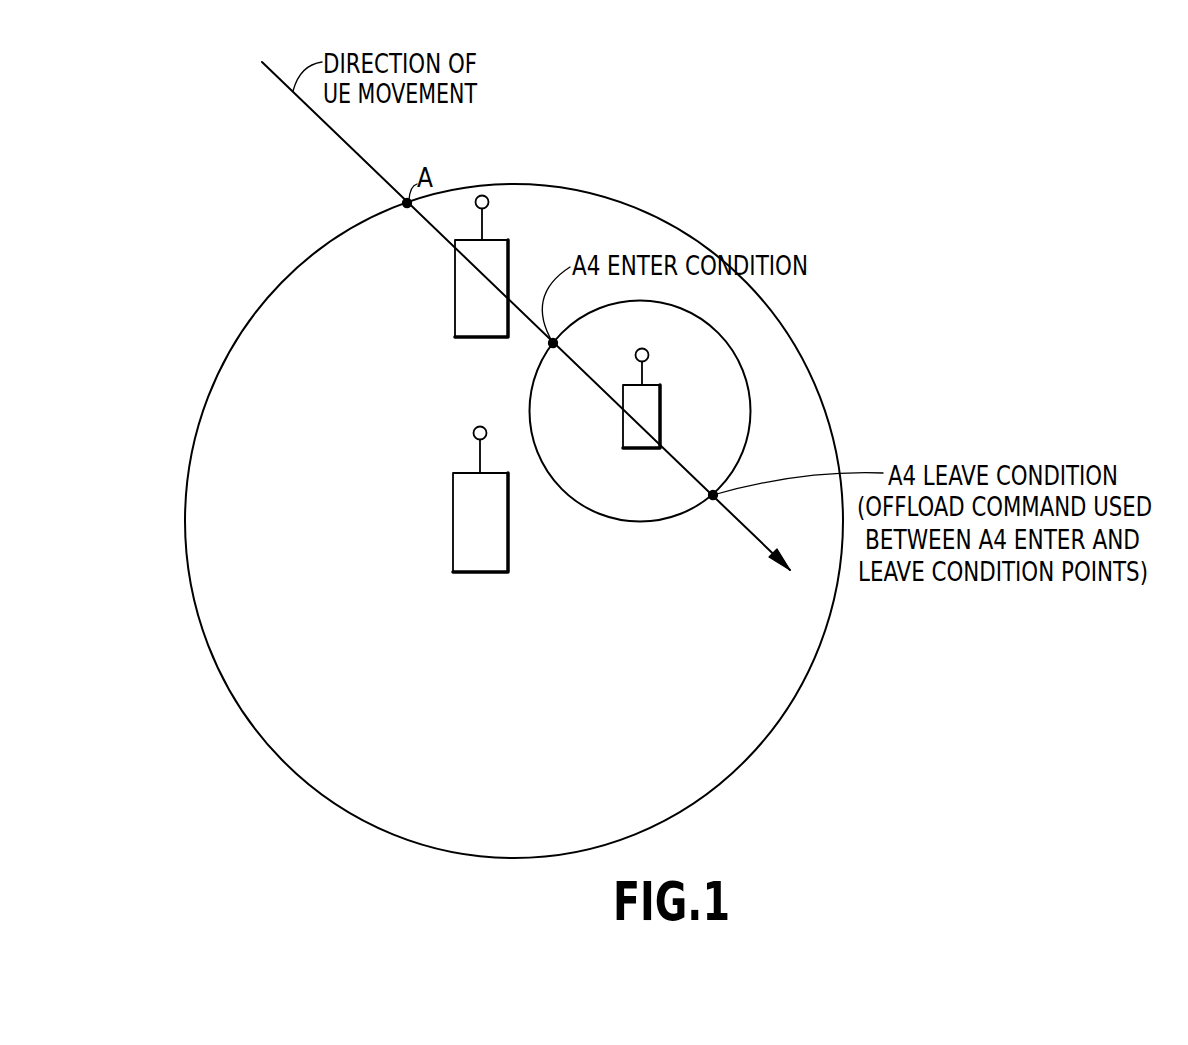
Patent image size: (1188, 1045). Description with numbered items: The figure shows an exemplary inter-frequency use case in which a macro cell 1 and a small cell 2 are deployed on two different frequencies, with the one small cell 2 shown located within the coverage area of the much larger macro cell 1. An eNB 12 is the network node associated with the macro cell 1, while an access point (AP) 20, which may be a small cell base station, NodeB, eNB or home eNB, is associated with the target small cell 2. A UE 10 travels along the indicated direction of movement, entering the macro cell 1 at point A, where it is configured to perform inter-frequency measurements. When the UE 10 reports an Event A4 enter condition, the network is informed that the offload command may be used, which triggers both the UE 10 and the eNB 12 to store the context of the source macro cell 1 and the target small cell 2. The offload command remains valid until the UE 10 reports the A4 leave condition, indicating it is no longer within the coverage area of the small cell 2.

The macro cell 1 is at (830, 428).
The small cell 2 is at (735, 356).
The UE 10 is at (455, 293).
The eNB 12 is at (453, 520).
The access point (AP) 20 is at (660, 413).